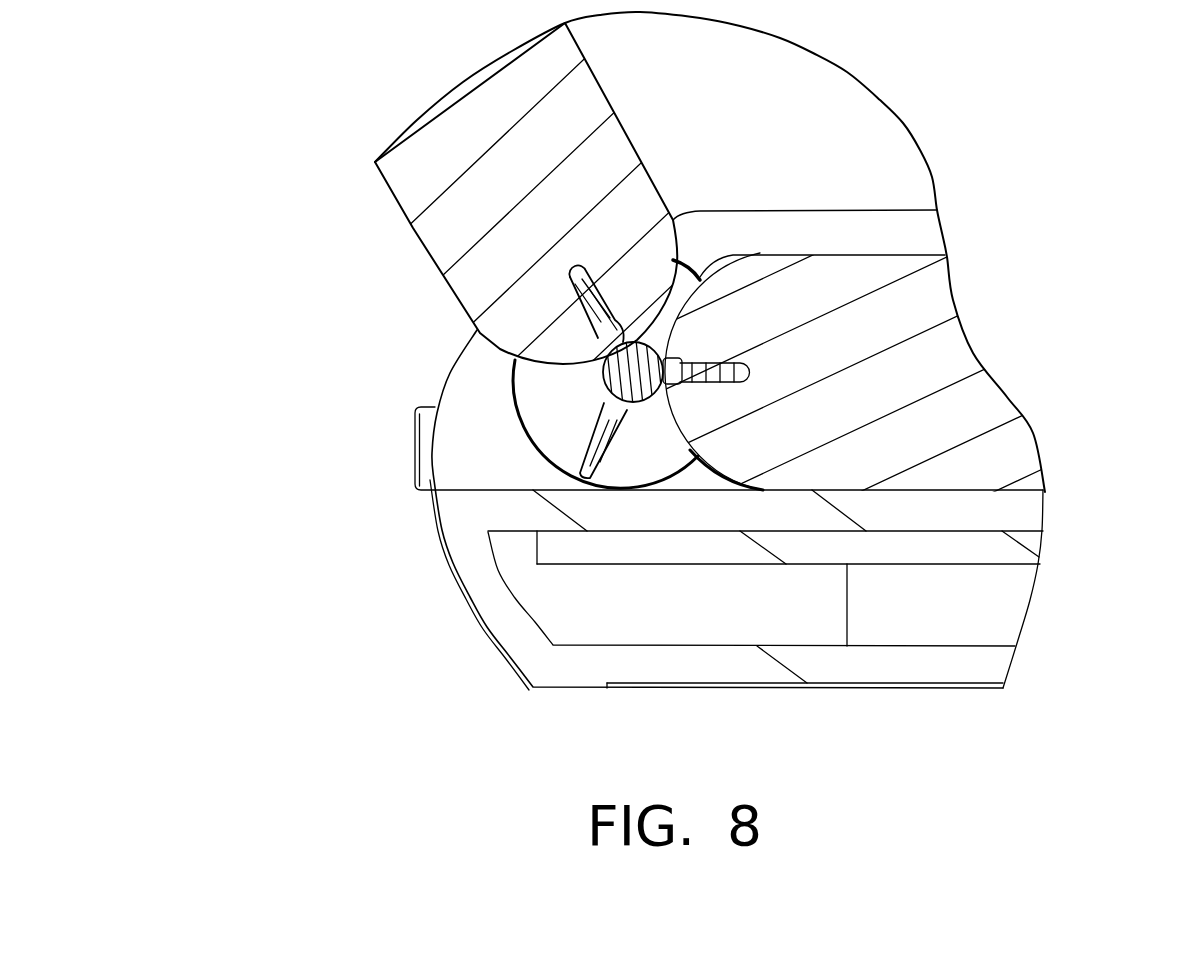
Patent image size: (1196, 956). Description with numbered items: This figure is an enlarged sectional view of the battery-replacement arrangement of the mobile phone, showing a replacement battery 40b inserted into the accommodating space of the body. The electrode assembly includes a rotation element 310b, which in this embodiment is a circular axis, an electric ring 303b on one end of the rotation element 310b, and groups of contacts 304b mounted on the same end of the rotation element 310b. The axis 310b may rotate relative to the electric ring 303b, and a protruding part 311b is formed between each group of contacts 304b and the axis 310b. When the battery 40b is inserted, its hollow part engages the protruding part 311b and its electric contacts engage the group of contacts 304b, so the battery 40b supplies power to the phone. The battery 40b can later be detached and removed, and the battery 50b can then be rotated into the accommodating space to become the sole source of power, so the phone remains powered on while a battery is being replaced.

The battery 40b is at (917, 293).
The battery 50b is at (495, 215).
The electric ring 303b is at (547, 402).
The contacts 304b is at (585, 452).
The rotation element 310b is at (637, 380).
The protruding part 311b is at (603, 401).